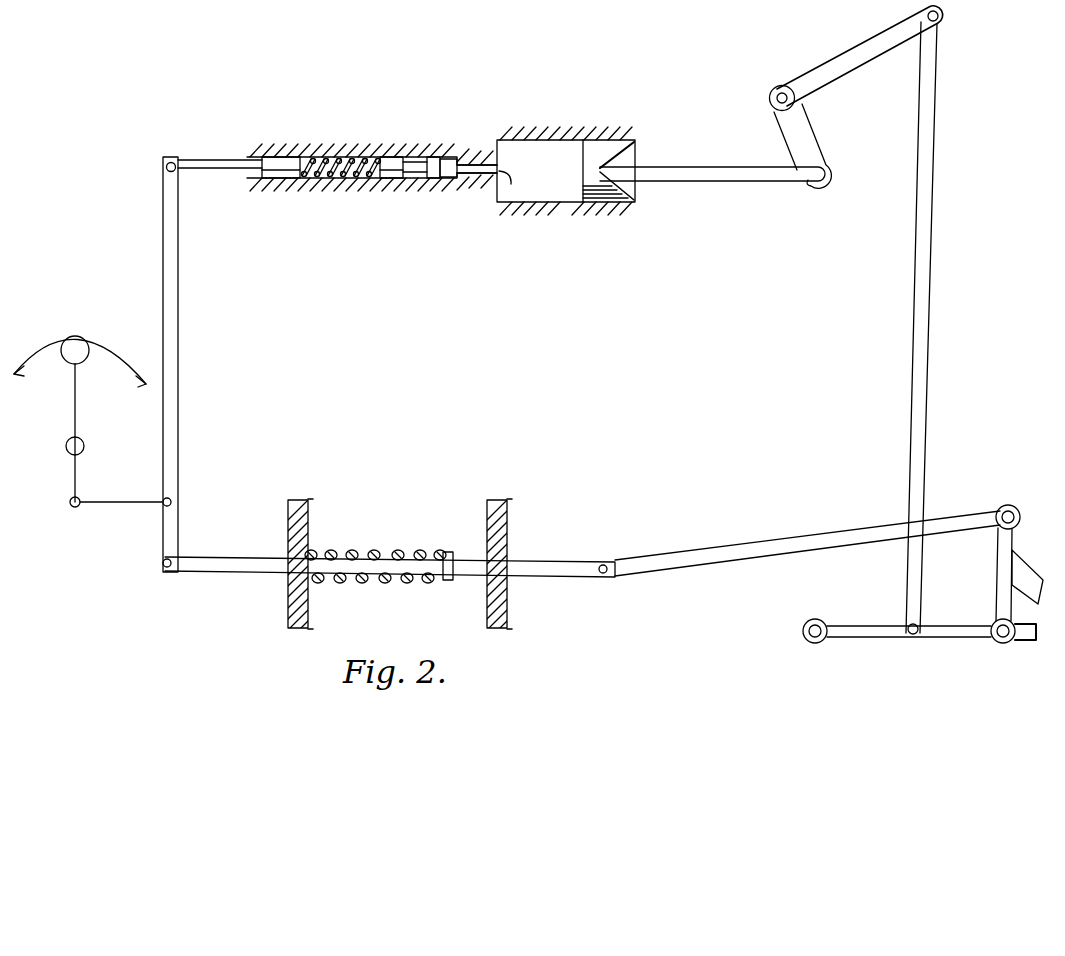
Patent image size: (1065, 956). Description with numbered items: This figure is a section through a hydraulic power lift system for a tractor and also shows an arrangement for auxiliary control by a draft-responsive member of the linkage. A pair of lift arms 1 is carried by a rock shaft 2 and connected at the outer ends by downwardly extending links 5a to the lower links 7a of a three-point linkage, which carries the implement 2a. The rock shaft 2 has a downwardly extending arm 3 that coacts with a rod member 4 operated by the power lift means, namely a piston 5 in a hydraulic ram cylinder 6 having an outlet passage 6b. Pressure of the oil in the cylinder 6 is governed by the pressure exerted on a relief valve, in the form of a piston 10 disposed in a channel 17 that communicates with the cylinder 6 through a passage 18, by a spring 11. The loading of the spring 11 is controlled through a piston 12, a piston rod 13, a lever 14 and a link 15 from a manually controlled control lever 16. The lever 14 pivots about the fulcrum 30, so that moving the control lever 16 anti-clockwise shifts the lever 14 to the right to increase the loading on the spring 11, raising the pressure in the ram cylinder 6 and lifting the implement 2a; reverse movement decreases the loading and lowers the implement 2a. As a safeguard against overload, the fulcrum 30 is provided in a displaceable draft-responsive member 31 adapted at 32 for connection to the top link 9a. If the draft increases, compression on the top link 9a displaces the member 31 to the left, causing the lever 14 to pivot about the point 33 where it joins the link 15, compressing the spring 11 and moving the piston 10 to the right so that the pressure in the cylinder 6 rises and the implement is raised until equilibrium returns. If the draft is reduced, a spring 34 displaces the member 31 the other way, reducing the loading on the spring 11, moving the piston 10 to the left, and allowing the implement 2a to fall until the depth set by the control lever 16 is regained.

The lift arms 1 is at (857, 62).
The rock shaft 2 is at (776, 98).
The implement 2a is at (1028, 624).
The downwardly extending arm 3 is at (810, 152).
The rod member 4 is at (730, 167).
The piston 5 is at (594, 150).
The links 5a is at (922, 283).
The ram cylinder 6 is at (566, 171).
The outlet passage 6b is at (478, 160).
The lower links 7a is at (882, 628).
The top link 9a is at (838, 530).
The piston 10 is at (433, 158).
The spring 11 is at (331, 155).
The piston 12 is at (277, 157).
The piston rod 13 is at (200, 160).
The lever 14 is at (173, 238).
The link 15 is at (107, 500).
The control lever 16 is at (73, 425).
The channel 17 is at (447, 178).
The passage 18 is at (515, 184).
The fulcrum 30 is at (171, 557).
The draft-responsive member 31 is at (234, 566).
The connection point 32 is at (603, 563).
The pivot point 33 is at (173, 500).
The spring 34 is at (376, 553).